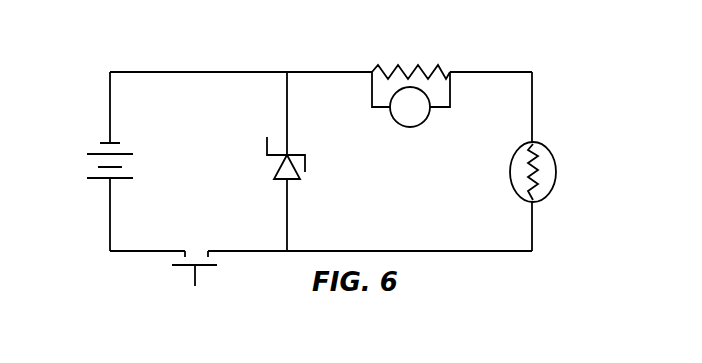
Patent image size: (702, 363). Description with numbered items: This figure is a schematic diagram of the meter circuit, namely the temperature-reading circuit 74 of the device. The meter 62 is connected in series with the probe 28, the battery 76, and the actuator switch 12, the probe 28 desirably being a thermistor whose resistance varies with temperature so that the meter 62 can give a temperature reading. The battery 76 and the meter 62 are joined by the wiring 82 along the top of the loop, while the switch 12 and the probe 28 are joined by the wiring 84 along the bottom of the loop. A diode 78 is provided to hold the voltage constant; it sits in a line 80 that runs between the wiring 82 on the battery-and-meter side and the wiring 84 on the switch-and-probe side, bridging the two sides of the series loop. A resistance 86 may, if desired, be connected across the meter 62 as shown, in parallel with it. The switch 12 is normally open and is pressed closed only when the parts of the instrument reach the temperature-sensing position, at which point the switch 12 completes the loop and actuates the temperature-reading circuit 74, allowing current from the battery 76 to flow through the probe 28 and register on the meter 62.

The switch 12 is at (205, 279).
The probe 28 is at (555, 160).
The meter 62 is at (417, 126).
The temperature-reading circuit 74 is at (546, 104).
The battery 76 is at (130, 147).
The diode 78 is at (294, 150).
The line 80 is at (287, 218).
The wiring 82 is at (211, 72).
The wiring 84 is at (367, 251).
The resistance 86 is at (415, 70).